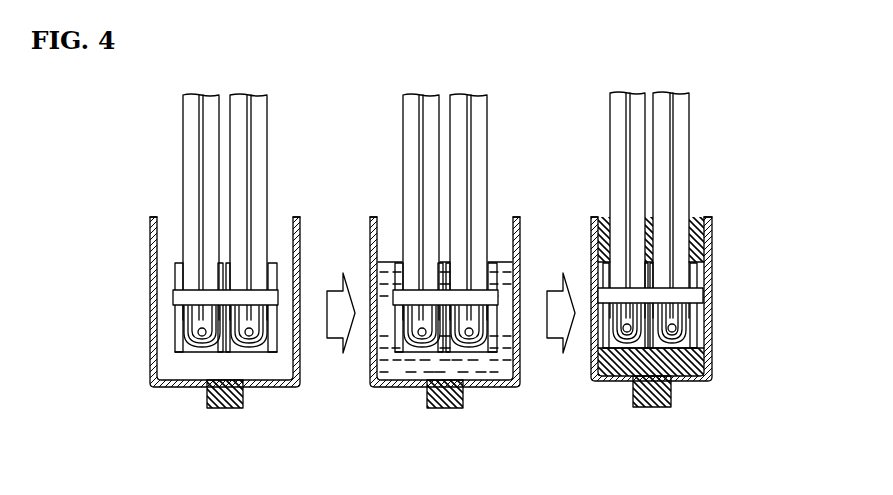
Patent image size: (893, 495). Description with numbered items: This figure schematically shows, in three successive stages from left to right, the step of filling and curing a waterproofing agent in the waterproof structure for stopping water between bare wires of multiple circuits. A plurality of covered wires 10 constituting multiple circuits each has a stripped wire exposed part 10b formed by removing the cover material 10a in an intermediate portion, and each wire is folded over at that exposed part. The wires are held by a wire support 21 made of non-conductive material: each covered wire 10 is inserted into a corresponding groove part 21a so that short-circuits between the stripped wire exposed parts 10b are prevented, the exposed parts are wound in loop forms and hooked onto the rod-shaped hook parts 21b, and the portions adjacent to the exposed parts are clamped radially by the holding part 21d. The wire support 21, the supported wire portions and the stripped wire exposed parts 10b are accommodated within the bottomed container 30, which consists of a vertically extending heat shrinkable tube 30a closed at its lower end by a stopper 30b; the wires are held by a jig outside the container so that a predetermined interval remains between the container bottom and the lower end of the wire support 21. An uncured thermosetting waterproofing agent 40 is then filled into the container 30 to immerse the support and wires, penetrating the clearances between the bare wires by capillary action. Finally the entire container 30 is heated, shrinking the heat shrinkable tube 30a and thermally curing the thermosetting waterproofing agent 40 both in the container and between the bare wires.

The covered wire 10 is at (430, 240).
The cover material 10a is at (200, 130).
The stripped wire exposed part 10b is at (188, 322).
The wire support 21 is at (433, 347).
The groove part 21a is at (187, 345).
The hook part 21b is at (202, 342).
The holding part 21d is at (175, 300).
The container 30 is at (412, 329).
The heat shrinkable tube 30a is at (154, 220).
The stopper 30b is at (228, 408).
The thermosetting waterproofing agent 40 is at (388, 262).